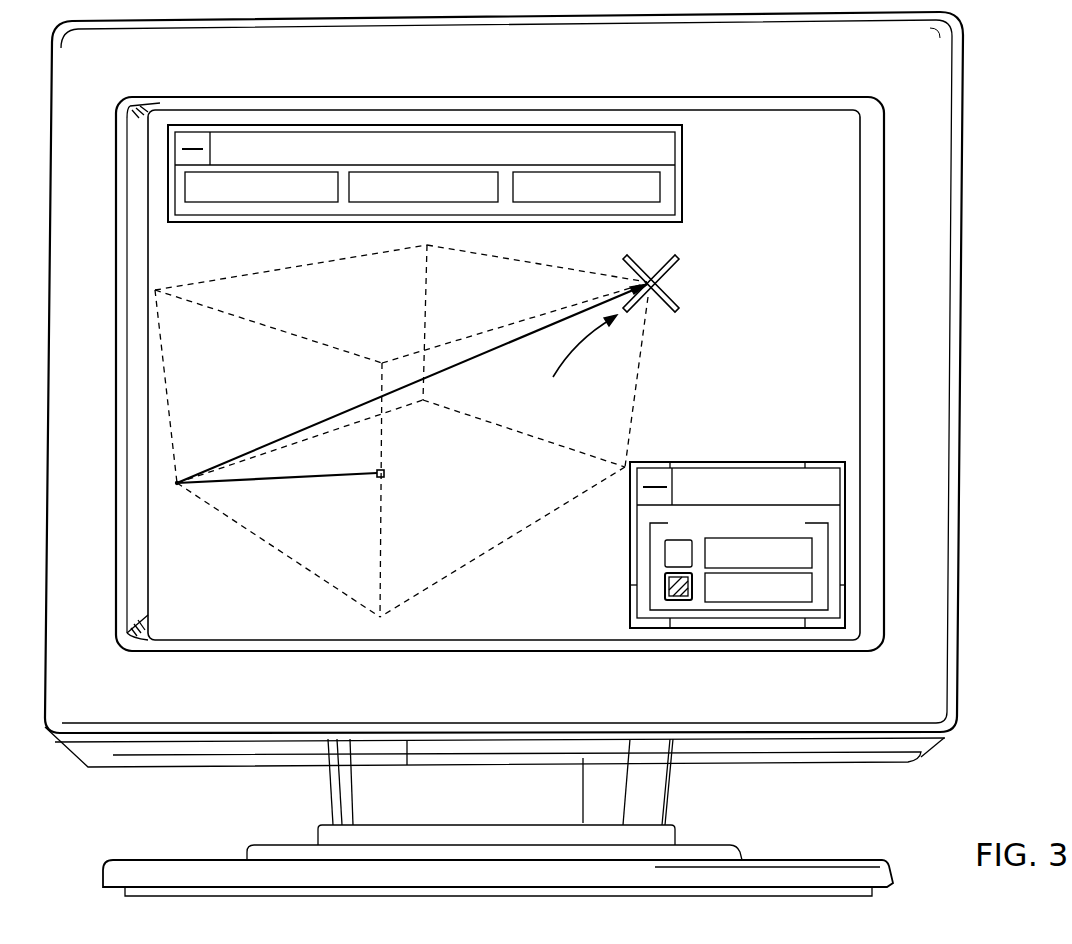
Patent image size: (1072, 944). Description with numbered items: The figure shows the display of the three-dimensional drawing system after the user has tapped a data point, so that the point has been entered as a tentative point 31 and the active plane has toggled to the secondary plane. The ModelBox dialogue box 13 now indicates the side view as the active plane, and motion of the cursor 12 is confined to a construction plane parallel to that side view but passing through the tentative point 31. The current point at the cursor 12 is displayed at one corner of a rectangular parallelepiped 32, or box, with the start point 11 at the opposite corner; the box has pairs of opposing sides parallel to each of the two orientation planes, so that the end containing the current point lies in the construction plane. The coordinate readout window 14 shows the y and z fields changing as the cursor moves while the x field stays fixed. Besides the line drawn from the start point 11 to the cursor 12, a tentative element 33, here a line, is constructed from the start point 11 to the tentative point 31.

The first point 11 is at (178, 487).
The cursor 12 is at (665, 273).
The ModelBox dialogue box 13 is at (768, 462).
The coordinate readout window 14 is at (683, 186).
The tentative point 31 is at (384, 477).
The rectangular parallelepiped 32 is at (482, 556).
The tentative element 33 is at (297, 481).